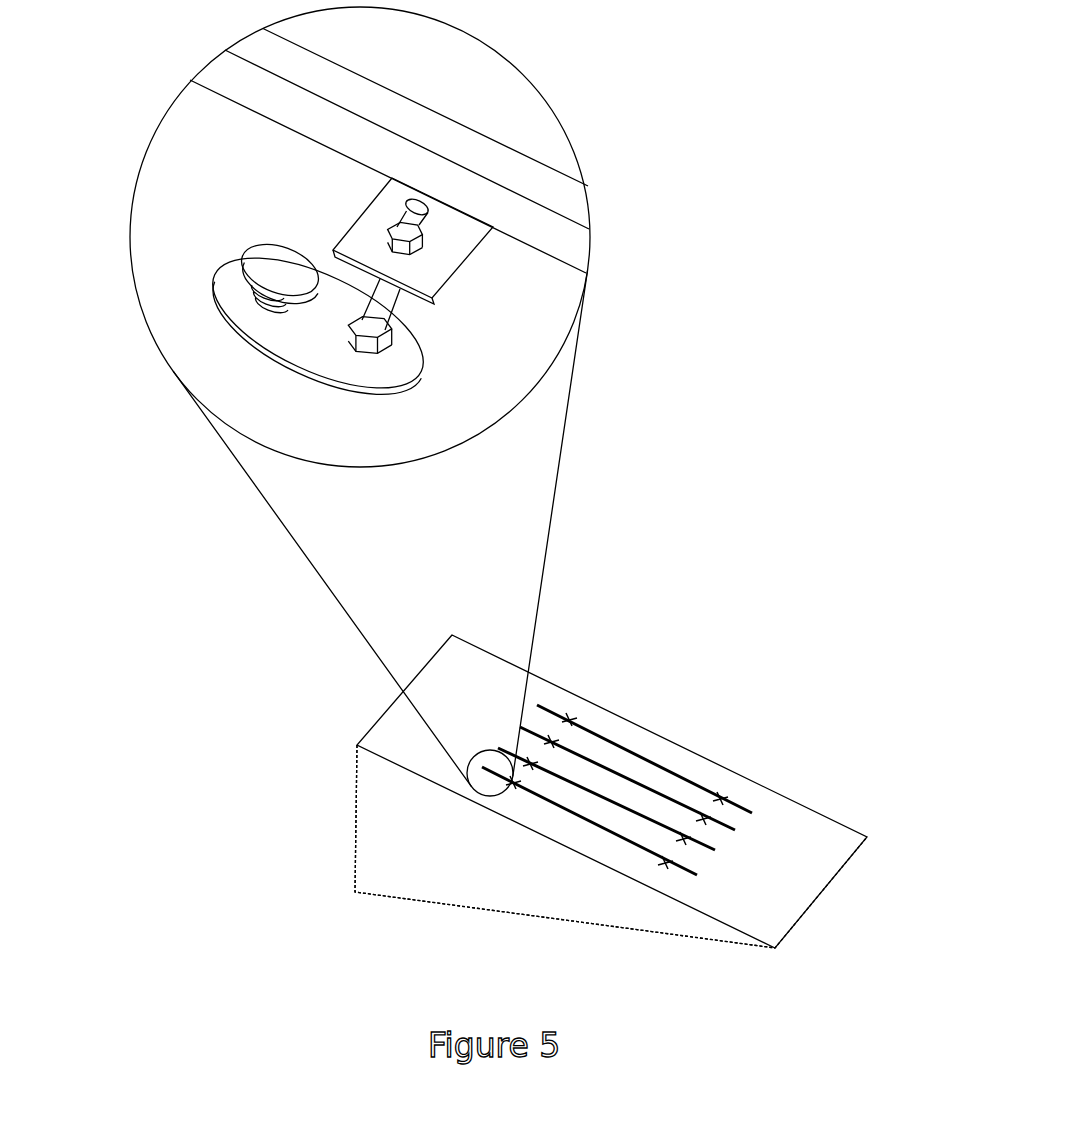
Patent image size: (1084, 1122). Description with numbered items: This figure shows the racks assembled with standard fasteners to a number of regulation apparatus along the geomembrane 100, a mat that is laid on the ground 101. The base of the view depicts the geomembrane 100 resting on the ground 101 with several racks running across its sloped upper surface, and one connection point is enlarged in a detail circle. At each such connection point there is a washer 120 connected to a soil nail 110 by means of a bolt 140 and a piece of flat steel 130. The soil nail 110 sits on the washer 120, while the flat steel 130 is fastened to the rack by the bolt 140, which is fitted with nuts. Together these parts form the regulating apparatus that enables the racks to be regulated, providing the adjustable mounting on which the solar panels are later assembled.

The geomembrane 100 is at (405, 758).
The ground 101 is at (383, 847).
The soil nail 110 is at (235, 277).
The washer 120 is at (312, 318).
The flat steel 130 is at (445, 266).
The bolt 140 is at (383, 293).